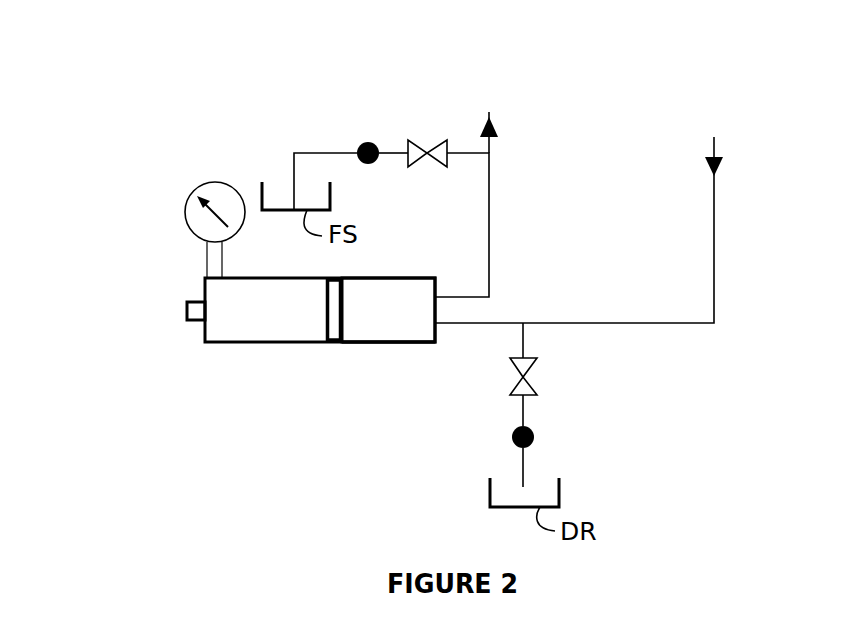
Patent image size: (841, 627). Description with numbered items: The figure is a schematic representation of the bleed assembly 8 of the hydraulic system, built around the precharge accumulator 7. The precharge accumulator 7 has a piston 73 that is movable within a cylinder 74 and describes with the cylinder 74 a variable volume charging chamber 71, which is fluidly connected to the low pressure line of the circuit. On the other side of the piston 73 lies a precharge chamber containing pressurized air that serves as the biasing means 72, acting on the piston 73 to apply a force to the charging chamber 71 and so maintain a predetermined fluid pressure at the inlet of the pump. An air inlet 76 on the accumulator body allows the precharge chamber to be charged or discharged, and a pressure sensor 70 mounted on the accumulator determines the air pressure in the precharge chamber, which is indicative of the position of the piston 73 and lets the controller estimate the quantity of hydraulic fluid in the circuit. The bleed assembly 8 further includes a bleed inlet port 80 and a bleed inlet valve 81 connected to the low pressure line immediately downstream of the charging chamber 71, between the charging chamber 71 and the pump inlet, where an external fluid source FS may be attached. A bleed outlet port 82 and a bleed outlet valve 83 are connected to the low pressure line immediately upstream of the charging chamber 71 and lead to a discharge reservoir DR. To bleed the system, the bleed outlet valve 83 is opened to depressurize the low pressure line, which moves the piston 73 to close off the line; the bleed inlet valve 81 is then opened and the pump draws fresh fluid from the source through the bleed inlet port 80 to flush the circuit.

The bleed assembly 8 is at (132, 66).
The precharge accumulator 7 is at (232, 387).
The pressure sensor 70 is at (184, 212).
The charging chamber 71 is at (375, 323).
The biasing means 72 is at (305, 323).
The piston 73 is at (340, 343).
The cylinder 74 is at (395, 342).
The air inlet 76 is at (198, 322).
The bleed inlet port 80 is at (368, 142).
The bleed inlet valve 81 is at (429, 157).
The bleed outlet port 82 is at (534, 437).
The bleed outlet valve 83 is at (532, 363).